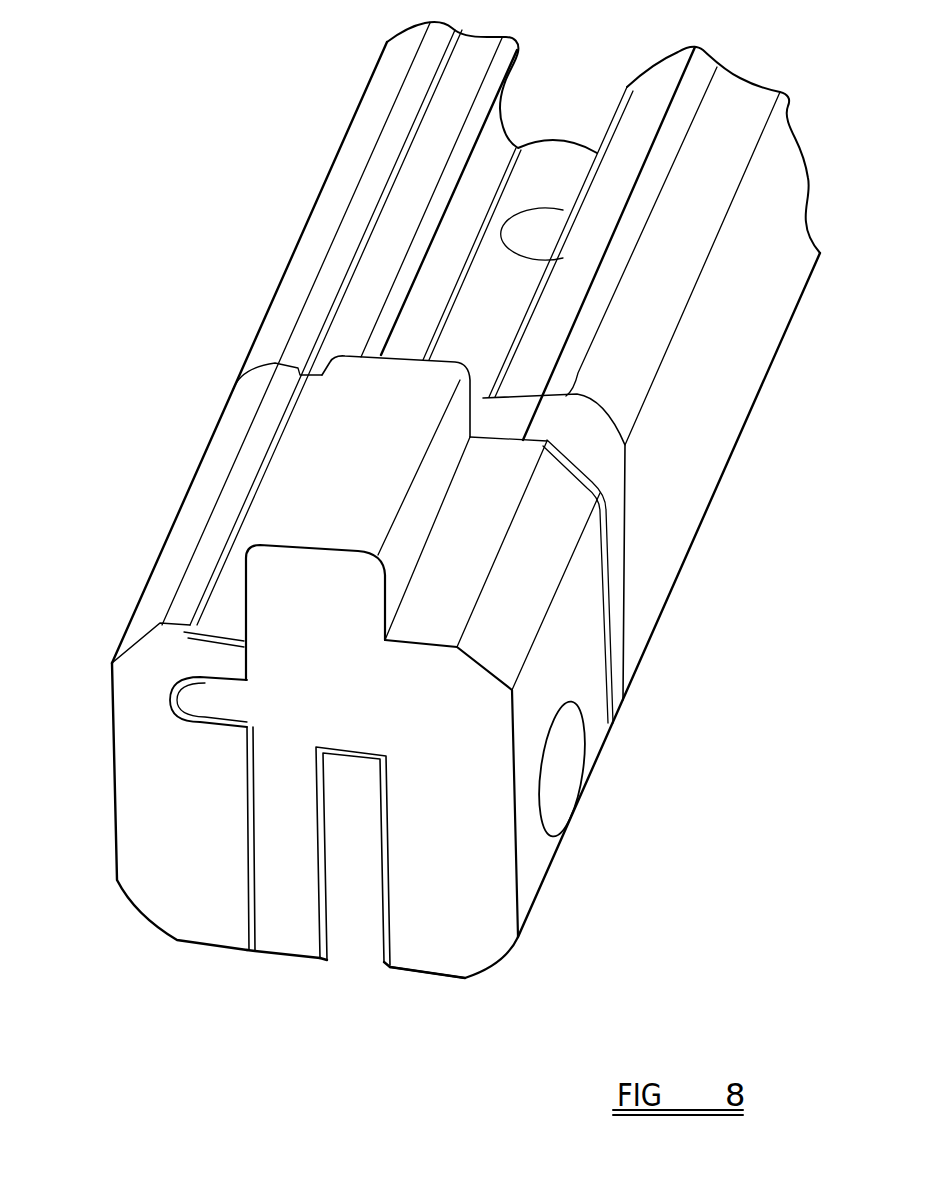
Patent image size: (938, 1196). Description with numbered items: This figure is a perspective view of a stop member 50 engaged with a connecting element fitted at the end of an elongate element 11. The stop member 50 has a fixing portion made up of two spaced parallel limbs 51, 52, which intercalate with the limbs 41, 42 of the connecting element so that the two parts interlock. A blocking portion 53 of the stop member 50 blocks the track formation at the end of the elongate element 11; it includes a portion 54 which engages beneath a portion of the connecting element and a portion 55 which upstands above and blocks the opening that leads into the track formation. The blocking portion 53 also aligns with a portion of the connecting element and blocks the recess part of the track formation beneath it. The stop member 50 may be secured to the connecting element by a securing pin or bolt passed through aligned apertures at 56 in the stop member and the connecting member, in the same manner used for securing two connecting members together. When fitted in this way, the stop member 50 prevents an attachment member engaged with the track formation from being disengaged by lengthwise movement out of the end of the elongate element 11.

The elongate element 11 is at (732, 397).
The limb of the connecting element 41 is at (353, 935).
The limb of the connecting element 42 is at (163, 881).
The stop member 50 is at (502, 974).
The limb of the fixing portion 51 is at (442, 912).
The limb of the fixing portion 52 is at (288, 927).
The blocking portion 53 is at (309, 806).
The portion engaging beneath the connecting element 54 is at (173, 692).
The upstanding portion 55 is at (274, 571).
The aligned apertures 56 is at (563, 772).